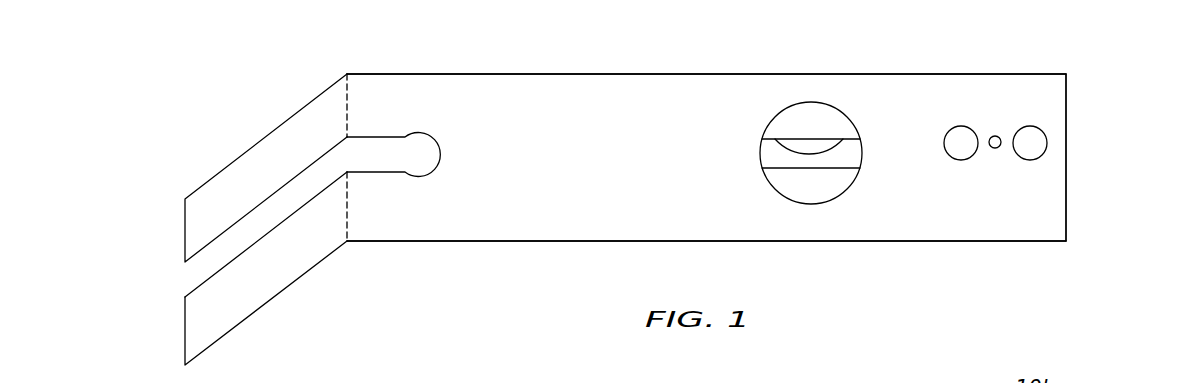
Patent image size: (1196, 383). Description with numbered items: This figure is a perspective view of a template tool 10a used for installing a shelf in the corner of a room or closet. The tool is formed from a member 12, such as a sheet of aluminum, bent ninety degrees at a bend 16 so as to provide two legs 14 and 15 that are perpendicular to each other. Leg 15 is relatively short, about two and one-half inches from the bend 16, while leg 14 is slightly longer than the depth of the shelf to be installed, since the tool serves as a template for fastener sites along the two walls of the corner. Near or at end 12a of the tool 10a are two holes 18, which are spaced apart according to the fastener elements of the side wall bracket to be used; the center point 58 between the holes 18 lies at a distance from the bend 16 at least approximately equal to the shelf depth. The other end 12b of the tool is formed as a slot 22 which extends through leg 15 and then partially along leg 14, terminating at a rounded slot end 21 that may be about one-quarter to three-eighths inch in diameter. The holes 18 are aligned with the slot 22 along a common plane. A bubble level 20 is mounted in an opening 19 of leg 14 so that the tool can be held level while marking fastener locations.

The template tool 10a is at (796, 56).
The member 12 is at (348, 242).
The end 12a is at (1067, 160).
The other end 12b is at (186, 240).
The leg 14 is at (533, 242).
The leg 15 is at (258, 308).
The bend 16 is at (347, 103).
The holes 18 is at (1028, 150).
The opening 19 is at (853, 123).
The bubble level 20 is at (775, 139).
The slot end 21 is at (438, 153).
The slot 22 is at (278, 188).
The center point 58 is at (996, 136).